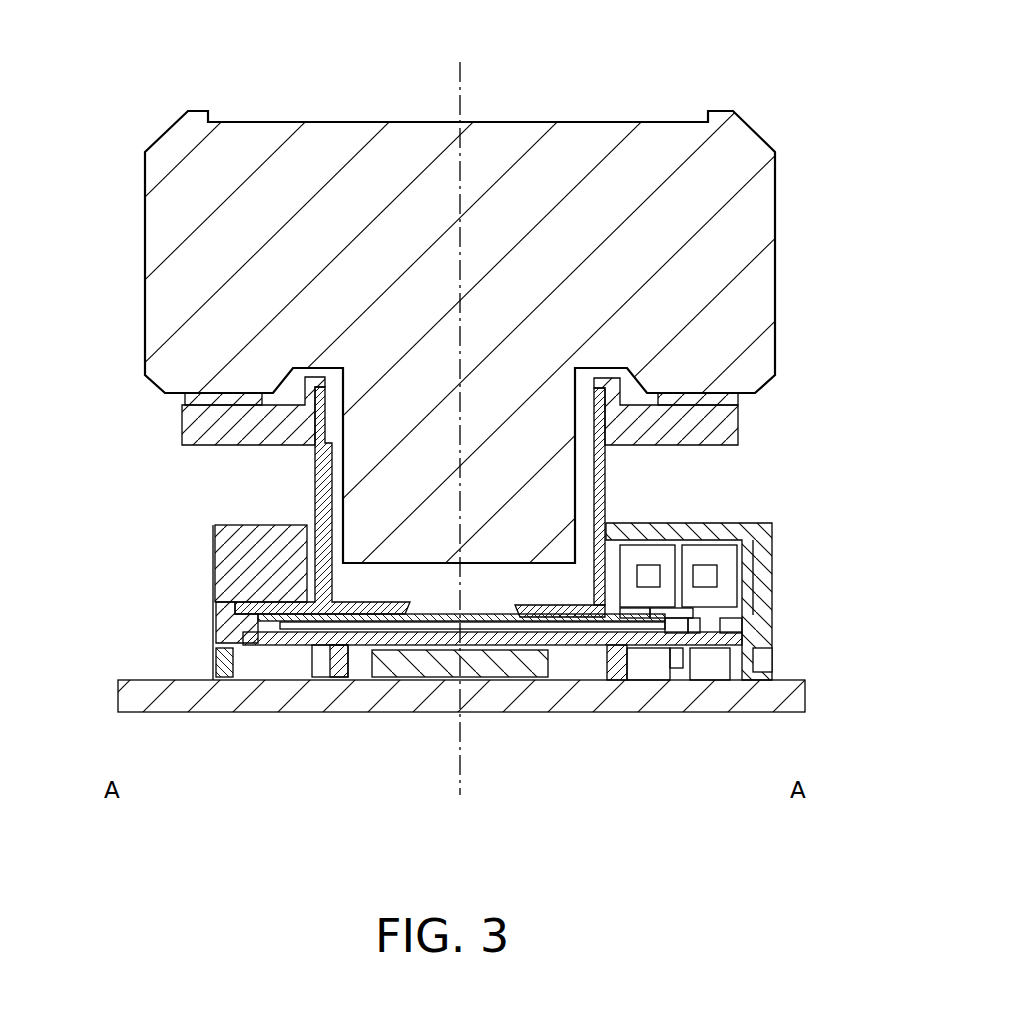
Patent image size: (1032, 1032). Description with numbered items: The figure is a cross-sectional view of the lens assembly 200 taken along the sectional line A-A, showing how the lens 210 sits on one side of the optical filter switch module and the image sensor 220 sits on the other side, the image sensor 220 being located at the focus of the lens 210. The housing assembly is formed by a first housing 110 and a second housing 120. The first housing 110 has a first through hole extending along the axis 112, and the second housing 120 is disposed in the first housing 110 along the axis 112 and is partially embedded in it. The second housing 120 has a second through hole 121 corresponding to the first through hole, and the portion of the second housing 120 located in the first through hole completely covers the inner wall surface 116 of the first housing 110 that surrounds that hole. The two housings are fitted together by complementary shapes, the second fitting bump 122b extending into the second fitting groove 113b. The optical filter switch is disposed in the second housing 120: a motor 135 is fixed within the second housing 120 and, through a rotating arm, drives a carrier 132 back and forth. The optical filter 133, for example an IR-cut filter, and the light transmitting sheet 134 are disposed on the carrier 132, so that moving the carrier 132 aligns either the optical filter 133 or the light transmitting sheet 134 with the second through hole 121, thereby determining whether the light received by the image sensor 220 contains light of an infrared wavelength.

The lens assembly 200 is at (143, 82).
The axis 112 is at (457, 78).
The lens 210 is at (667, 150).
The second through hole 121 is at (589, 462).
The inner wall surface 116 is at (600, 402).
The first housing 110 is at (740, 431).
The motor 135 is at (712, 556).
The second housing 120 is at (748, 566).
The carrier 132 is at (283, 606).
The second fitting groove 113b is at (236, 606).
The second fitting bump 122b is at (222, 646).
The optical filter 133 is at (307, 626).
The light transmitting sheet 134 is at (433, 631).
The image sensor 220 is at (512, 668).